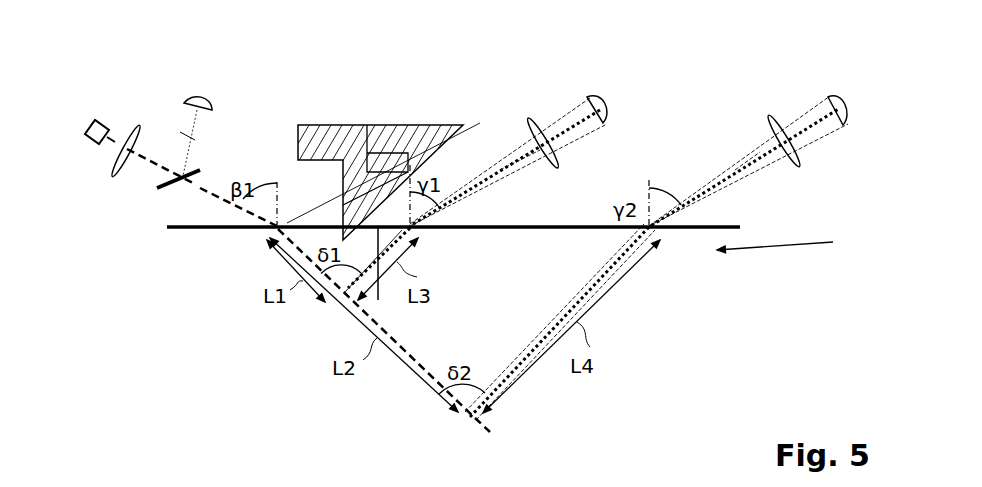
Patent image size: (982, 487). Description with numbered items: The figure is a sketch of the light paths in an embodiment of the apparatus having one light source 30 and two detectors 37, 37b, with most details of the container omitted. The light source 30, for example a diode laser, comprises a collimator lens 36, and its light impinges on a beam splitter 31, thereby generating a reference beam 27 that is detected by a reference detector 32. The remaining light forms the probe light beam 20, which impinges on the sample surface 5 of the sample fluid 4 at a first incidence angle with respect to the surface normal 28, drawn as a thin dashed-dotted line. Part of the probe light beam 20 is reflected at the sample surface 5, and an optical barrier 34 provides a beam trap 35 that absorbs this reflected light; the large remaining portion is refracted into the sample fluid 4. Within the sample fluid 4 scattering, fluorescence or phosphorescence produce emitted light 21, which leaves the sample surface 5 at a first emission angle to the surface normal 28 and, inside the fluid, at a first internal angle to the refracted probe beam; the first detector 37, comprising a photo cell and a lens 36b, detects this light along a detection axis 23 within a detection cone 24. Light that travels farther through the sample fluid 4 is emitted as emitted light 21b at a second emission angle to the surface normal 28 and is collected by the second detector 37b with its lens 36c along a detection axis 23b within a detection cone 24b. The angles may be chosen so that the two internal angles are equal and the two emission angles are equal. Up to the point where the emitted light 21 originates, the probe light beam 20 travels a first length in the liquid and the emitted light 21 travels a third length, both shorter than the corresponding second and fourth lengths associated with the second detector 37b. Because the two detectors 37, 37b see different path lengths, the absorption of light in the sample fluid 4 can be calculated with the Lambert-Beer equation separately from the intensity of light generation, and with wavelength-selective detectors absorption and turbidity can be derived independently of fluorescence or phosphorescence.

The sample fluid 4 is at (788, 249).
The sample surface 5 is at (178, 227).
The probe light beam 20 is at (203, 188).
The emitted light 21 is at (511, 94).
The detection axis 23 is at (518, 158).
The detection cone 24 is at (482, 153).
The emitted light 21b is at (740, 94).
The detection axis 23b is at (745, 165).
The detection cone 24b is at (690, 180).
The reference beam 27 is at (187, 137).
The surface normal 28 is at (280, 207).
The light source 30 is at (126, 134).
The beam splitter 31 is at (160, 185).
The reference detector 32 is at (200, 96).
The optical barrier 34 is at (397, 124).
The beam trap 35 is at (357, 124).
The collimator lens 36 is at (113, 176).
The lens 36b is at (547, 116).
The lens 36c is at (772, 124).
The detector 37 is at (602, 95).
The detector 37b is at (843, 95).